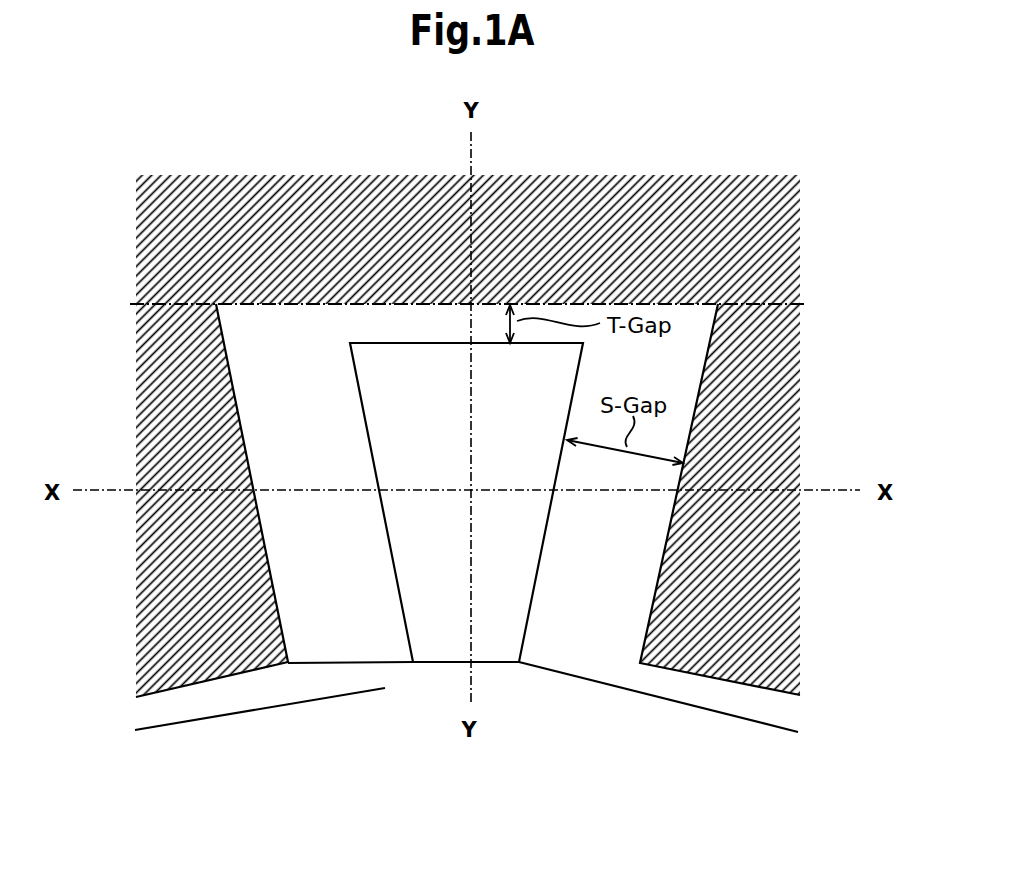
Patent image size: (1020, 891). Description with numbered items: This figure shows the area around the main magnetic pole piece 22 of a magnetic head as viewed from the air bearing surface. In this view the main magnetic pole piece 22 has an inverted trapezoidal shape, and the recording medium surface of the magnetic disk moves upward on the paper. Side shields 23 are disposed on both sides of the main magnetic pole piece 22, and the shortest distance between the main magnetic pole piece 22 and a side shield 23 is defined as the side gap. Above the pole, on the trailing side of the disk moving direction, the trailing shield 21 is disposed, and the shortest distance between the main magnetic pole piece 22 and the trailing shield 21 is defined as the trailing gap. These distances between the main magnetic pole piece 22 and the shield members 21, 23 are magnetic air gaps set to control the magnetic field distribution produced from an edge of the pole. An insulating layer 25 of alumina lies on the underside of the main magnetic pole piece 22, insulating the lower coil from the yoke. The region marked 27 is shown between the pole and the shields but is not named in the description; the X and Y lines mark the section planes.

The trailing shield 21 is at (778, 243).
The main magnetic pole piece 22 is at (500, 568).
The side shield 23 is at (160, 399).
The insulating layer 25 is at (385, 688).
The nonmagnetic gap layer 27 is at (323, 557).